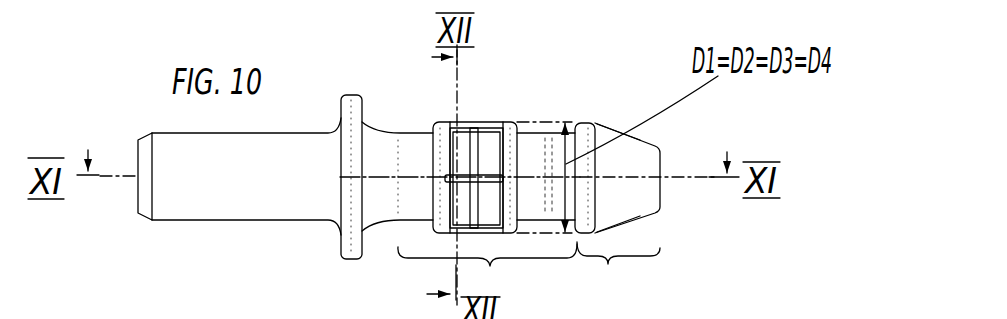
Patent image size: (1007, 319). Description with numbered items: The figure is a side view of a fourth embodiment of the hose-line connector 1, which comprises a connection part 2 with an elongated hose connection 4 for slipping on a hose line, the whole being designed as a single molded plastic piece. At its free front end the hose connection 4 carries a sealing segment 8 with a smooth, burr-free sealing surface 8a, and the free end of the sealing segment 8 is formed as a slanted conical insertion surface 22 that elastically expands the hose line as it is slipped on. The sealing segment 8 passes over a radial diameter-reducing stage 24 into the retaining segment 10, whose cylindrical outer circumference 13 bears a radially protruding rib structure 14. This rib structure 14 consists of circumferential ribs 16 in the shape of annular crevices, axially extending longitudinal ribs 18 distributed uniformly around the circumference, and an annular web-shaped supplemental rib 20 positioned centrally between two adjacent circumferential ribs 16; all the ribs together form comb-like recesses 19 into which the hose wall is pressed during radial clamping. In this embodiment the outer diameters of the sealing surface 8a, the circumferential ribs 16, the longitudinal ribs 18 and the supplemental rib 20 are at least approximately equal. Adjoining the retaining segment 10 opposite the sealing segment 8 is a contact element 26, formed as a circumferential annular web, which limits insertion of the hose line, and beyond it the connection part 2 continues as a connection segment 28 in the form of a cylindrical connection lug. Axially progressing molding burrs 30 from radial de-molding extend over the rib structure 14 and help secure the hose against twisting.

The hose-line connector 1 is at (565, 72).
The connection part 2 is at (319, 213).
The hose connection 4 is at (407, 212).
The sealing segment 8 is at (608, 116).
The sealing surface 8a is at (591, 116).
The retaining segment 10 is at (487, 211).
The cylindrical outer circumference 13 is at (537, 119).
The rib structure 14 is at (489, 96).
The circumferential rib 16 is at (440, 130).
The longitudinal rib 18 is at (497, 127).
The comb-like recesses 19 is at (488, 207).
The supplemental rib 20 is at (478, 157).
The slanted conical insertion surface 22 is at (638, 222).
The radial diameter-reducing stage 24 is at (584, 197).
The contact element 26 is at (343, 116).
The connection segment 28 is at (195, 201).
The molding burrs 30 is at (421, 170).